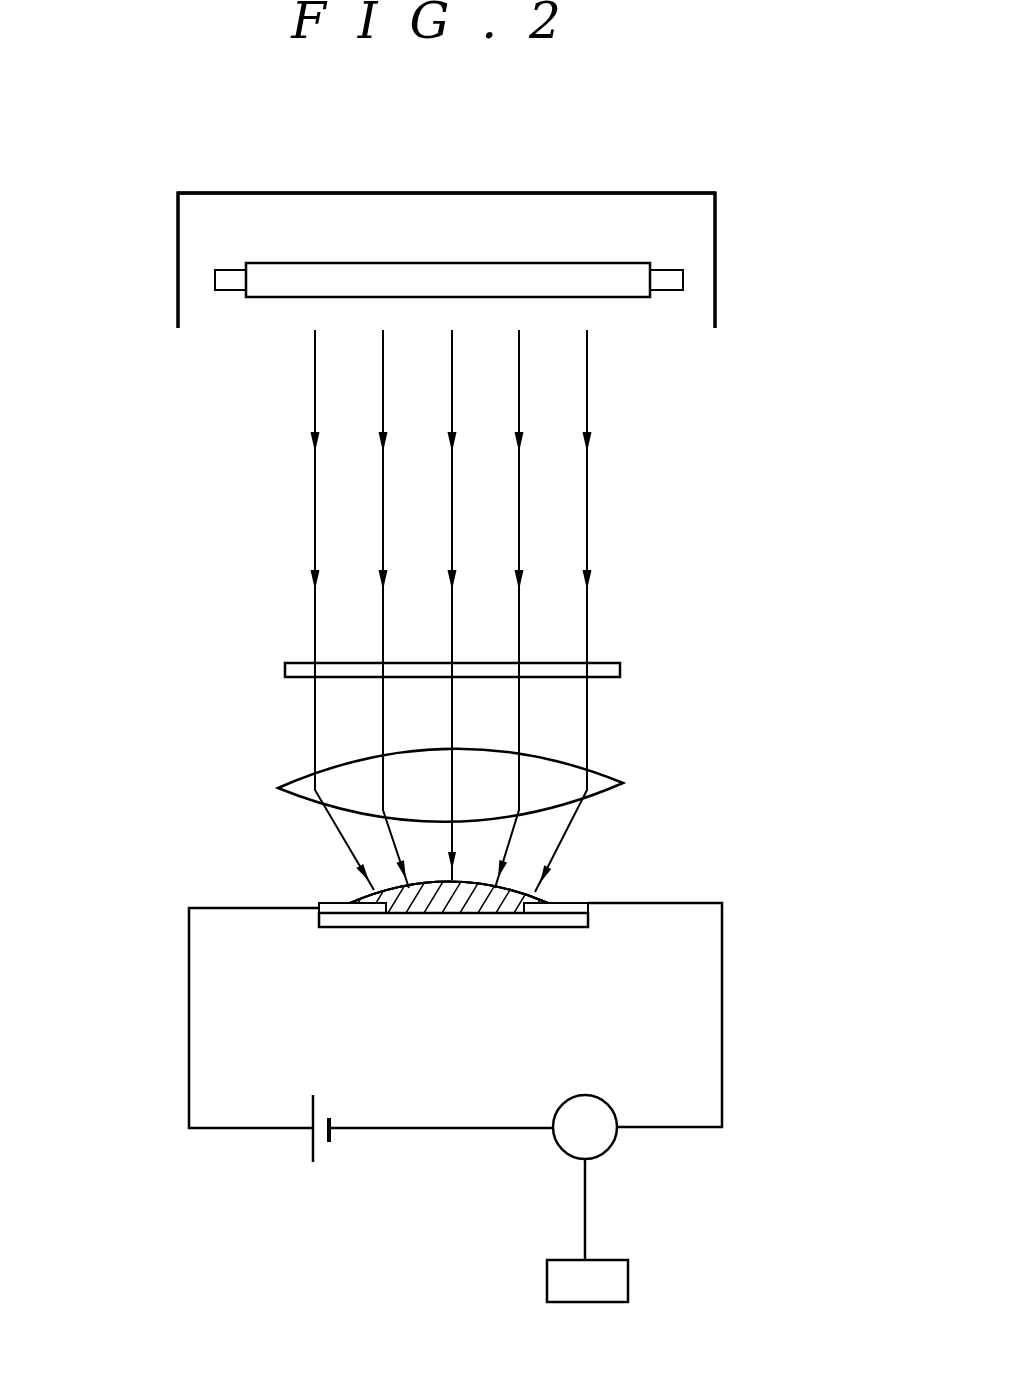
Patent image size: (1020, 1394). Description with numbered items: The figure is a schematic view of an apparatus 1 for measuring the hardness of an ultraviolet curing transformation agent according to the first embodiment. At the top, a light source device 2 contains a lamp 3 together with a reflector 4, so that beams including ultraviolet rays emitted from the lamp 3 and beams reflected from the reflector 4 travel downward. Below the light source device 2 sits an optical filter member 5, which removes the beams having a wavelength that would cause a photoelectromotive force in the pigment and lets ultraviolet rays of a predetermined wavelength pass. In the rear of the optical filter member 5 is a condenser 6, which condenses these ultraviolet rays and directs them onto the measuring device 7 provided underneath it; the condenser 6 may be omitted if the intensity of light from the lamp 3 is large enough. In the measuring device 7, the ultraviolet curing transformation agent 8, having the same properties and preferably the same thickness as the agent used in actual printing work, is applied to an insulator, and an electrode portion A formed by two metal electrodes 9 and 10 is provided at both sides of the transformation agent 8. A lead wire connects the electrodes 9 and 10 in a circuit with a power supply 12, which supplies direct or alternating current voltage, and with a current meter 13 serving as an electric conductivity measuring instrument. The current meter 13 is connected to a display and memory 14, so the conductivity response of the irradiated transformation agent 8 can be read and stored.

The apparatus 1 is at (148, 300).
The light source device 2 is at (307, 190).
The lamp 3 is at (423, 263).
The reflector 4 is at (570, 193).
The optical filter member 5 is at (620, 670).
The condenser 6 is at (605, 780).
The measuring device 7 is at (655, 885).
The ultraviolet curing transformation agent 8 is at (372, 900).
The electrode 9 is at (573, 902).
The electrode 10 is at (327, 905).
The electrode portion A is at (330, 890).
The power supply 12 is at (313, 1153).
The current meter 13 is at (610, 1150).
The display and memory 14 is at (628, 1280).